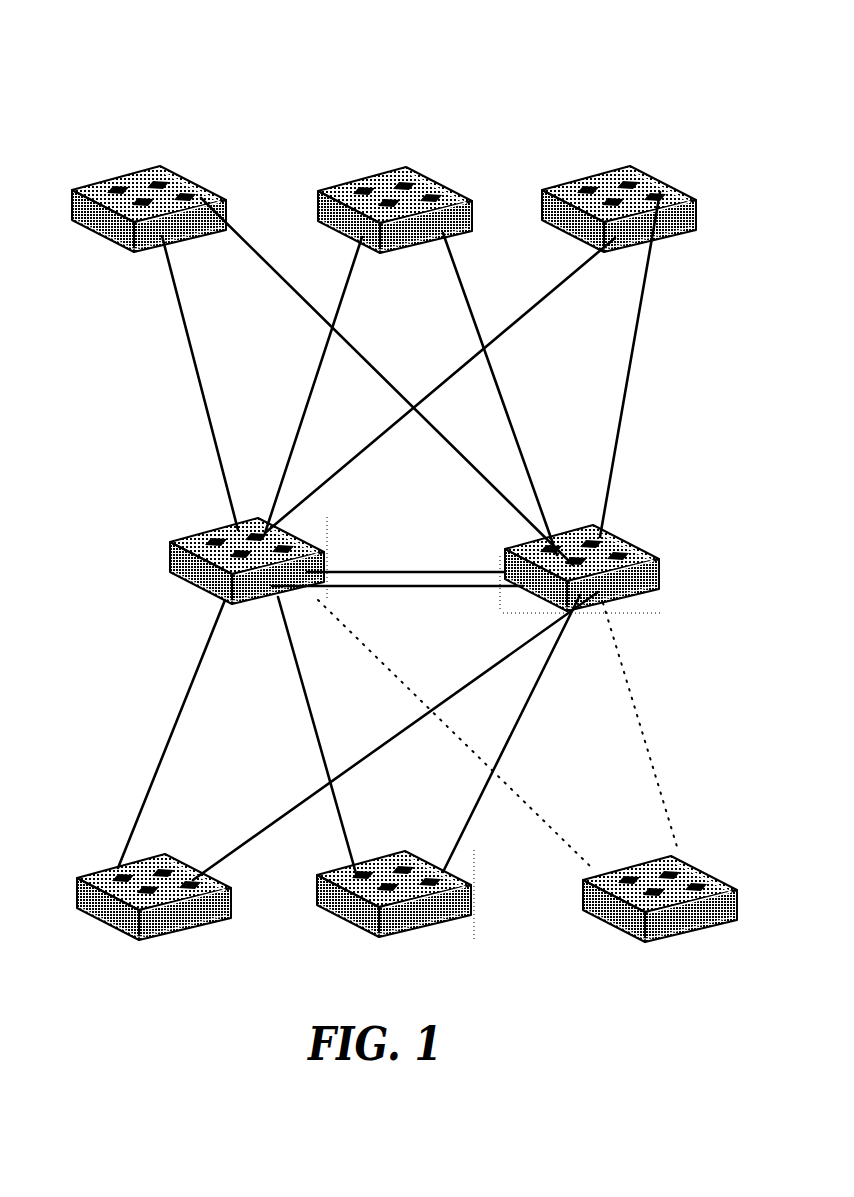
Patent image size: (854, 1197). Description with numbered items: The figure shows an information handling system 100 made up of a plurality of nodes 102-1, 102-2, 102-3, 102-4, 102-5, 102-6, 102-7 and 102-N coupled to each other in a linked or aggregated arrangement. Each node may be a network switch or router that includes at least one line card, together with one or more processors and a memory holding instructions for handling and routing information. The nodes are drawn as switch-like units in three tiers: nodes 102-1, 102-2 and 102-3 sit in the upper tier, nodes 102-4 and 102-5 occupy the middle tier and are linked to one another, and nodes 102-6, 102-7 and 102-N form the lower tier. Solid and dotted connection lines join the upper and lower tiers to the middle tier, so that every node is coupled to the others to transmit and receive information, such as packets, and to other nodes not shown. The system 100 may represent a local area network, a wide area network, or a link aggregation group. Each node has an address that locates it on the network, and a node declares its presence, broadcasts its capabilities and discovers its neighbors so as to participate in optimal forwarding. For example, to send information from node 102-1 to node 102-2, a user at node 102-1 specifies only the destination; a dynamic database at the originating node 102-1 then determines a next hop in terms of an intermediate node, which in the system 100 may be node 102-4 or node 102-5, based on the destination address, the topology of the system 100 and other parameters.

The information handling system 100 is at (84, 34).
The node 102-1 is at (149, 185).
The node 102-2 is at (395, 185).
The node 102-3 is at (619, 185).
The node 102-4 is at (216, 556).
The node 102-5 is at (611, 559).
The node 102-6 is at (154, 918).
The node 102-7 is at (394, 917).
The node 102-N is at (660, 919).